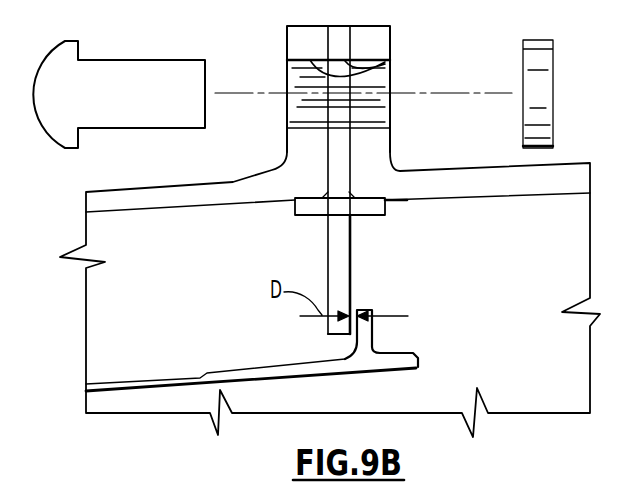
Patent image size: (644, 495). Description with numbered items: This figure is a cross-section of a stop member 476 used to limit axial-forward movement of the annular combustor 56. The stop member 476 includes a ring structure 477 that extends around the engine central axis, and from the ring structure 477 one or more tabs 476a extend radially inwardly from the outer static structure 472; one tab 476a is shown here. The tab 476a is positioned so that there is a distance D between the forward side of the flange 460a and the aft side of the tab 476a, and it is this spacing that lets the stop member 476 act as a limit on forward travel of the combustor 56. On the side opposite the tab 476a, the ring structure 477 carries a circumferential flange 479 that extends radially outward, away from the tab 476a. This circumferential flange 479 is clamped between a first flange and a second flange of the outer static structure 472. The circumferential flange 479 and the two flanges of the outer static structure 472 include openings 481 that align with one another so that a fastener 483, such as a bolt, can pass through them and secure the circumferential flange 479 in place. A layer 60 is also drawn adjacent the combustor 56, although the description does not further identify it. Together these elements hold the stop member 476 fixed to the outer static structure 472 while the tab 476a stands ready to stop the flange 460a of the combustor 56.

The annular combustor 56 is at (138, 399).
The upper layer 60 is at (167, 378).
The flange 460a is at (366, 341).
The outer static structure 472 is at (285, 147).
The stop member 476 is at (349, 255).
The tab 476a is at (335, 325).
The ring structure 477 is at (345, 203).
The circumferential flange 479 is at (339, 113).
The openings 481 is at (360, 71).
The fastener 483 is at (127, 58).